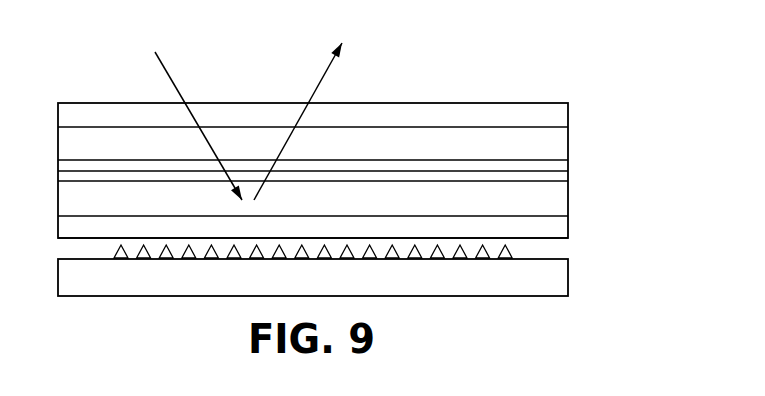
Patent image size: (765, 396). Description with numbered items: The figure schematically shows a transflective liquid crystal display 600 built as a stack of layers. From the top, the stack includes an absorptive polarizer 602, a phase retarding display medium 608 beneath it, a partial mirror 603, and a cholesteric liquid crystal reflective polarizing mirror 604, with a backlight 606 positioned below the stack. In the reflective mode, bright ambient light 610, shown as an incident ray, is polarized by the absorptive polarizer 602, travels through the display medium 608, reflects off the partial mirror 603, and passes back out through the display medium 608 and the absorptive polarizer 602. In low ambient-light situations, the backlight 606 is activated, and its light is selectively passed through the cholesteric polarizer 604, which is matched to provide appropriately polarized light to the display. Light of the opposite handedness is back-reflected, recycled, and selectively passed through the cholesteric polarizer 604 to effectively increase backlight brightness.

The transflective liquid crystal display 600 is at (440, 65).
The absorptive polarizer 602 is at (568, 116).
The partial mirror 603 is at (568, 200).
The cholesteric liquid crystal reflective polarizing mirror 604 is at (568, 225).
The backlight 606 is at (568, 272).
The phase retarding display medium 608 is at (577, 127).
The bright ambient light 610 is at (170, 75).